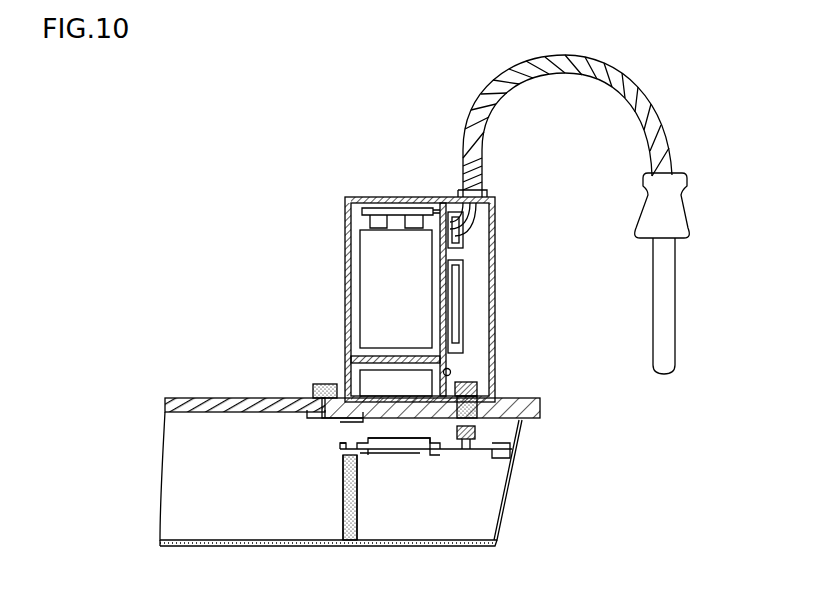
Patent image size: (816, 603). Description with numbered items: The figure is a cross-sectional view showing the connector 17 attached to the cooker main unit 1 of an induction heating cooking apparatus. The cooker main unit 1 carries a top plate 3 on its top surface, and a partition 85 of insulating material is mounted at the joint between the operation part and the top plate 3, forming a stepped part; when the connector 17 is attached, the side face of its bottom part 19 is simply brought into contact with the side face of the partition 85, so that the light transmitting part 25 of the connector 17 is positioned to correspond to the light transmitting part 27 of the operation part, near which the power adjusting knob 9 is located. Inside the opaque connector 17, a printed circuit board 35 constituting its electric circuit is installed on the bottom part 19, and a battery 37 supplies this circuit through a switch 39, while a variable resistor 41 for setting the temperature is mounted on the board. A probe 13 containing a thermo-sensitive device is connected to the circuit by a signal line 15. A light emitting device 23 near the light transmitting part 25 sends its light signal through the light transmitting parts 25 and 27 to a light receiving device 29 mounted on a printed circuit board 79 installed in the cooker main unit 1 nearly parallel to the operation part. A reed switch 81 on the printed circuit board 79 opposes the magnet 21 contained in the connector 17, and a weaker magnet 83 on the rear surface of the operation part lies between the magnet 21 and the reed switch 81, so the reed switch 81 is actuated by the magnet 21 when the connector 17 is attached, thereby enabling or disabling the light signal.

The cooker main unit 1 is at (512, 526).
The top plate 3 is at (203, 398).
The power adjusting knob 9 is at (540, 408).
The probe 13 is at (667, 306).
The signal line 15 is at (637, 102).
The connector 17 is at (390, 192).
The bottom part 19 is at (373, 378).
The magnet 21 is at (355, 360).
The light emitting device 23 is at (480, 385).
The light transmitting part 25 is at (485, 398).
The light transmitting part 27 is at (477, 428).
The light receiving device 29 is at (512, 450).
The printed circuit board 35 is at (443, 198).
The battery 37 is at (373, 283).
The switch 39 is at (475, 222).
The variable resistor 41 is at (470, 290).
The printed circuit board 79 is at (395, 455).
The reed switch 81 is at (423, 449).
The magnet 83 is at (363, 422).
The partition 85 is at (312, 390).